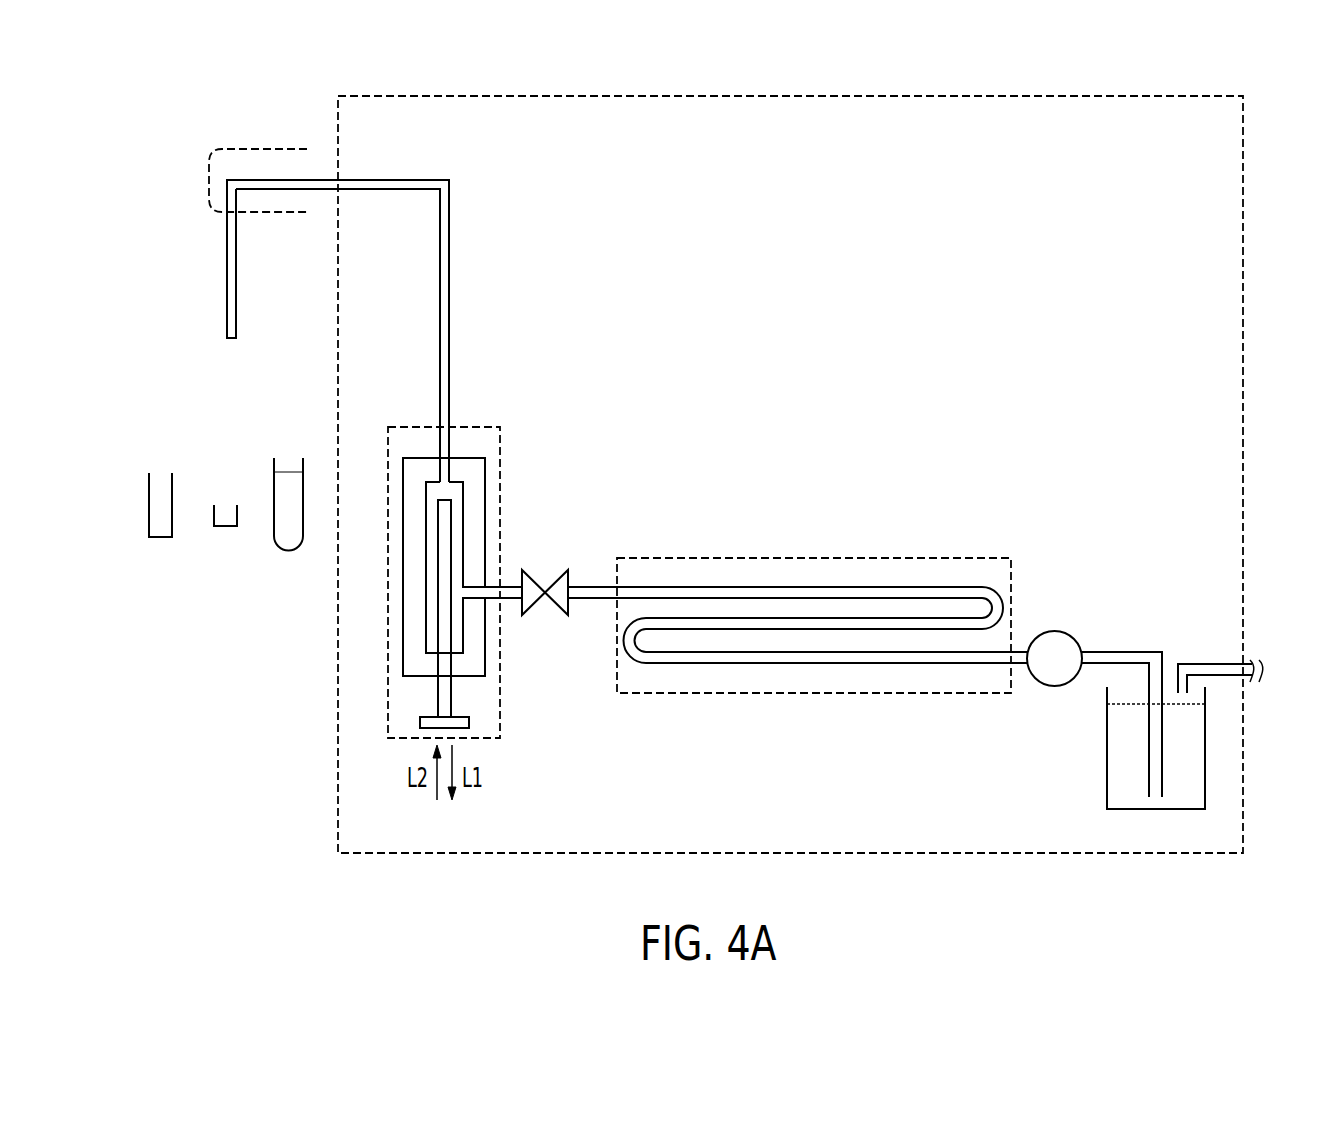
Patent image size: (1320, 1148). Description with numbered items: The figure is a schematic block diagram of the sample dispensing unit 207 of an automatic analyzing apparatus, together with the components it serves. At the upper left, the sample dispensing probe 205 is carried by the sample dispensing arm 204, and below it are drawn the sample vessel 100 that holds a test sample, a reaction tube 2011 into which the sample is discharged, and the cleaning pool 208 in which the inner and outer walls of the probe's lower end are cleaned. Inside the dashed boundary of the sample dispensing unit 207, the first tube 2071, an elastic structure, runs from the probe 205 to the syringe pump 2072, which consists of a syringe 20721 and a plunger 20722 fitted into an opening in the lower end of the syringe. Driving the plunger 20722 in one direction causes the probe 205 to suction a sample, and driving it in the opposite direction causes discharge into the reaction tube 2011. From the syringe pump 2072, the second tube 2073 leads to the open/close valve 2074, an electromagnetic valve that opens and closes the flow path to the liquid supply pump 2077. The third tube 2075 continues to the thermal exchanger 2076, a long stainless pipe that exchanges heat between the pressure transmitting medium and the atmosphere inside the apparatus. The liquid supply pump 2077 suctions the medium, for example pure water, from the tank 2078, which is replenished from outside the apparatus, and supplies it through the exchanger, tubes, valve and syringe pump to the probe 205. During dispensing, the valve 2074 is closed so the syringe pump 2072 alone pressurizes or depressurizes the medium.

The sample vessel 100 is at (289, 551).
The sample dispensing arm 204 is at (230, 146).
The sample dispensing probe 205 is at (227, 268).
The sample dispensing unit 207 is at (1075, 96).
The cleaning pool 208 is at (158, 538).
The reaction tube 2011 is at (227, 527).
The first tube 2071 is at (395, 180).
The syringe pump 2072 is at (487, 427).
The syringe 20721 is at (485, 660).
The plunger 20722 is at (451, 699).
The second tube 2073 is at (510, 583).
The open/close valve 2074 is at (553, 580).
The third tube 2075 is at (590, 585).
The thermal exchanger 2076 is at (947, 558).
The liquid supply pump 2077 is at (1053, 629).
The tank 2078 is at (1107, 783).